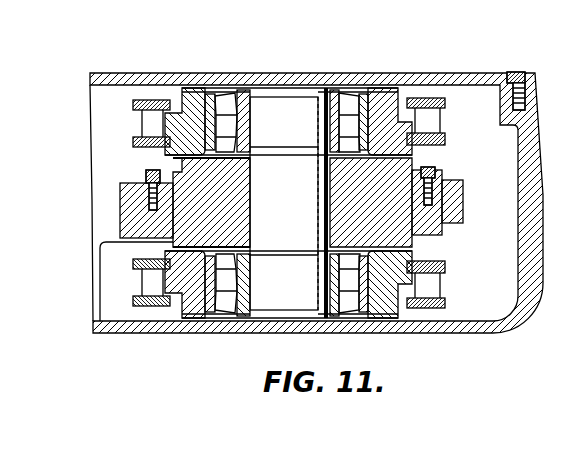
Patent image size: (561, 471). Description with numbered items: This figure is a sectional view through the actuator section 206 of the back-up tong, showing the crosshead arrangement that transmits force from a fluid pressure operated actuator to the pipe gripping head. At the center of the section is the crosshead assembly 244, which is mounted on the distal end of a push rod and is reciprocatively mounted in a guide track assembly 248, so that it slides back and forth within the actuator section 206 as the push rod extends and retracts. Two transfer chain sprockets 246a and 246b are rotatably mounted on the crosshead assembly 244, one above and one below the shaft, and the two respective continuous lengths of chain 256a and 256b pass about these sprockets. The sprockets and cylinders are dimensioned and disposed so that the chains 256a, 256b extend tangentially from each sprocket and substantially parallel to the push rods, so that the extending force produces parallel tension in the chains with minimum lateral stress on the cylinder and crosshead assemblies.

The actuator section 206 is at (190, 66).
The crosshead assembly 244 is at (380, 217).
The guide track assembly 248 is at (460, 183).
The transfer chain sprocket 246a is at (396, 90).
The transfer chain sprocket 246b is at (195, 300).
The continuous length of chain 256a is at (447, 98).
The continuous length of chain 256b is at (445, 300).